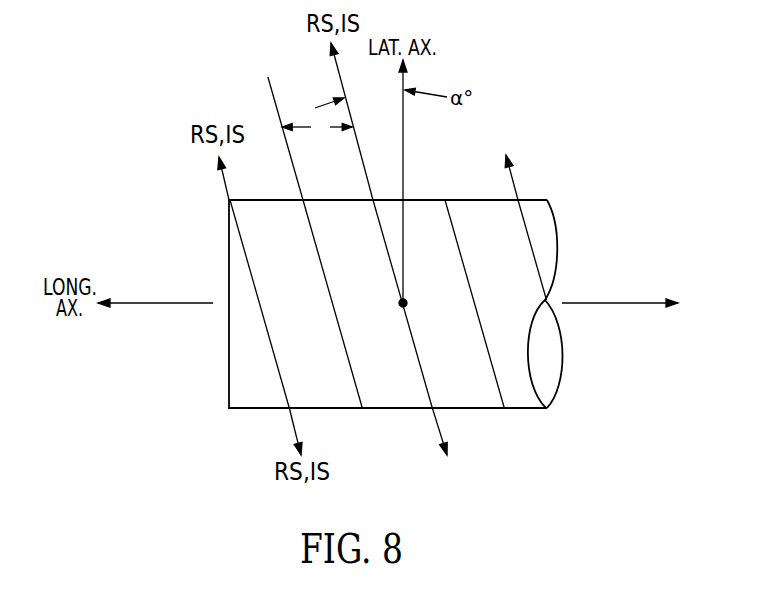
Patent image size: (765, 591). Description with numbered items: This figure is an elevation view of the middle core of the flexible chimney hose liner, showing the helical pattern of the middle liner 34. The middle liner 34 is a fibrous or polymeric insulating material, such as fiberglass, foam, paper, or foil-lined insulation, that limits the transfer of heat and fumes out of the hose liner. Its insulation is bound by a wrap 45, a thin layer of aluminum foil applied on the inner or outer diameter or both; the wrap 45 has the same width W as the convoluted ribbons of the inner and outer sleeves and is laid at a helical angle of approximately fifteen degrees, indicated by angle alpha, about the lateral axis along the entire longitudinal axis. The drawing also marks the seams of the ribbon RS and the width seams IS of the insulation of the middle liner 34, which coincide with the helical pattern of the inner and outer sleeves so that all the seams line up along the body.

The middle liner 34 is at (298, 298).
The wrap 45 is at (478, 212).
The width W is at (317, 118).
The seams of the ribbon RS is at (451, 447).
The width seams IS is at (517, 159).